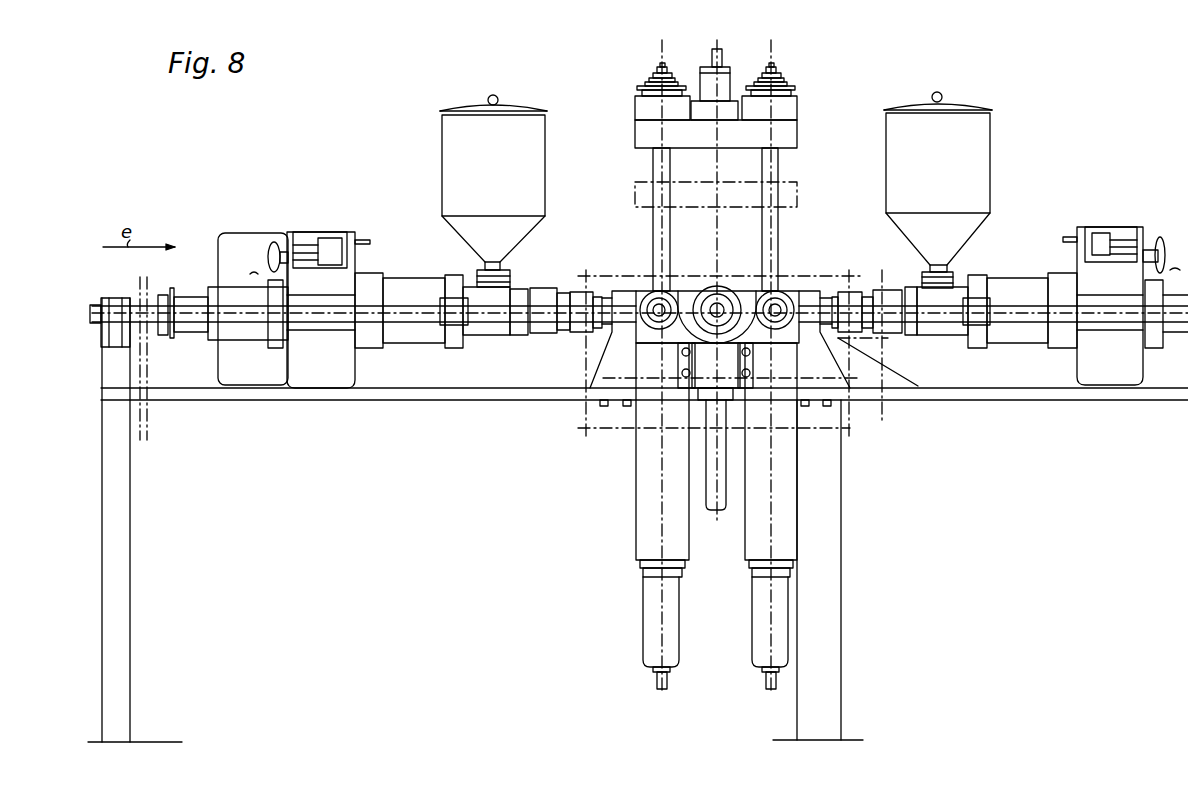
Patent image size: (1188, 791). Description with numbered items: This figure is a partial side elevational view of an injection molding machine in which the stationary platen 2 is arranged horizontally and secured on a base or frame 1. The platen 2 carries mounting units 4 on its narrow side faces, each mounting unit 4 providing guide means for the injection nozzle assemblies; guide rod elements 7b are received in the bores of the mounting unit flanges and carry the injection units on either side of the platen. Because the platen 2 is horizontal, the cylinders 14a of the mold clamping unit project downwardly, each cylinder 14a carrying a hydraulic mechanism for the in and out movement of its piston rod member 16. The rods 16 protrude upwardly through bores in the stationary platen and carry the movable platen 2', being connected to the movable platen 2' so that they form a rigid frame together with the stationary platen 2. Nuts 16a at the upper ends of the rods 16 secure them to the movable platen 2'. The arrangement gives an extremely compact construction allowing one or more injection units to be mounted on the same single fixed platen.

The frame 1 is at (822, 622).
The stationary platen 2 is at (717, 359).
The movable platen 2' is at (729, 98).
The mounting unit 4 is at (603, 362).
The guide rod element 7b is at (498, 314).
The cylinder 14a is at (643, 512).
The piston rod member 16 is at (657, 170).
The adjusting nut 16a is at (672, 70).